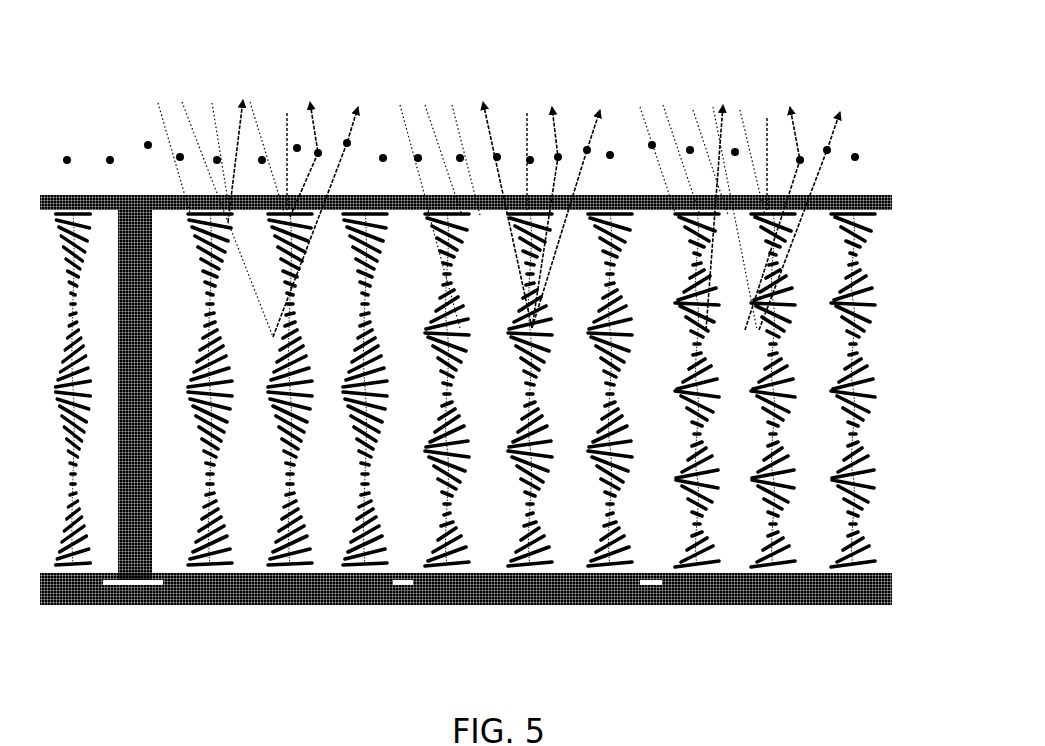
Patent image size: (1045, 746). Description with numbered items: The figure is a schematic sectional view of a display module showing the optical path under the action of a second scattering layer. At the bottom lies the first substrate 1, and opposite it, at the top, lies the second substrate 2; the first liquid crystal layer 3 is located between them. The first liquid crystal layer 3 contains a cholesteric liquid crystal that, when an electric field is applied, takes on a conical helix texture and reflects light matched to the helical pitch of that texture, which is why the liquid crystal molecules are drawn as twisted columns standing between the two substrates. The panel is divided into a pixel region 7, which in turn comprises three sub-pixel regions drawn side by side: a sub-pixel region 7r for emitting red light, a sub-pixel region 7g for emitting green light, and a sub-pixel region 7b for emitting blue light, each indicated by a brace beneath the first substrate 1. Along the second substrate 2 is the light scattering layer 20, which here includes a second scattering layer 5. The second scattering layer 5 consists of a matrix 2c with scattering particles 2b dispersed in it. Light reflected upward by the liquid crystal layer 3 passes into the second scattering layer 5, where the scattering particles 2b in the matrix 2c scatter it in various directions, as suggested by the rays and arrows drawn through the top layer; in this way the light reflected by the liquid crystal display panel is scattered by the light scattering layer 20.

The first substrate 1 is at (897, 573).
The second substrate 2 is at (485, 106).
The scattering particles 2b is at (465, 107).
The matrix 2c is at (877, 146).
The first liquid crystal layer 3 is at (493, 392).
The second scattering layer 5 is at (485, 97).
The light scattering layer 20 is at (485, 97).
The pixel region 7 is at (523, 392).
The sub-pixel region for emitting red light 7r is at (390, 633).
The sub-pixel region for emitting green light 7g is at (647, 633).
The sub-pixel region for emitting blue light 7b is at (888, 633).